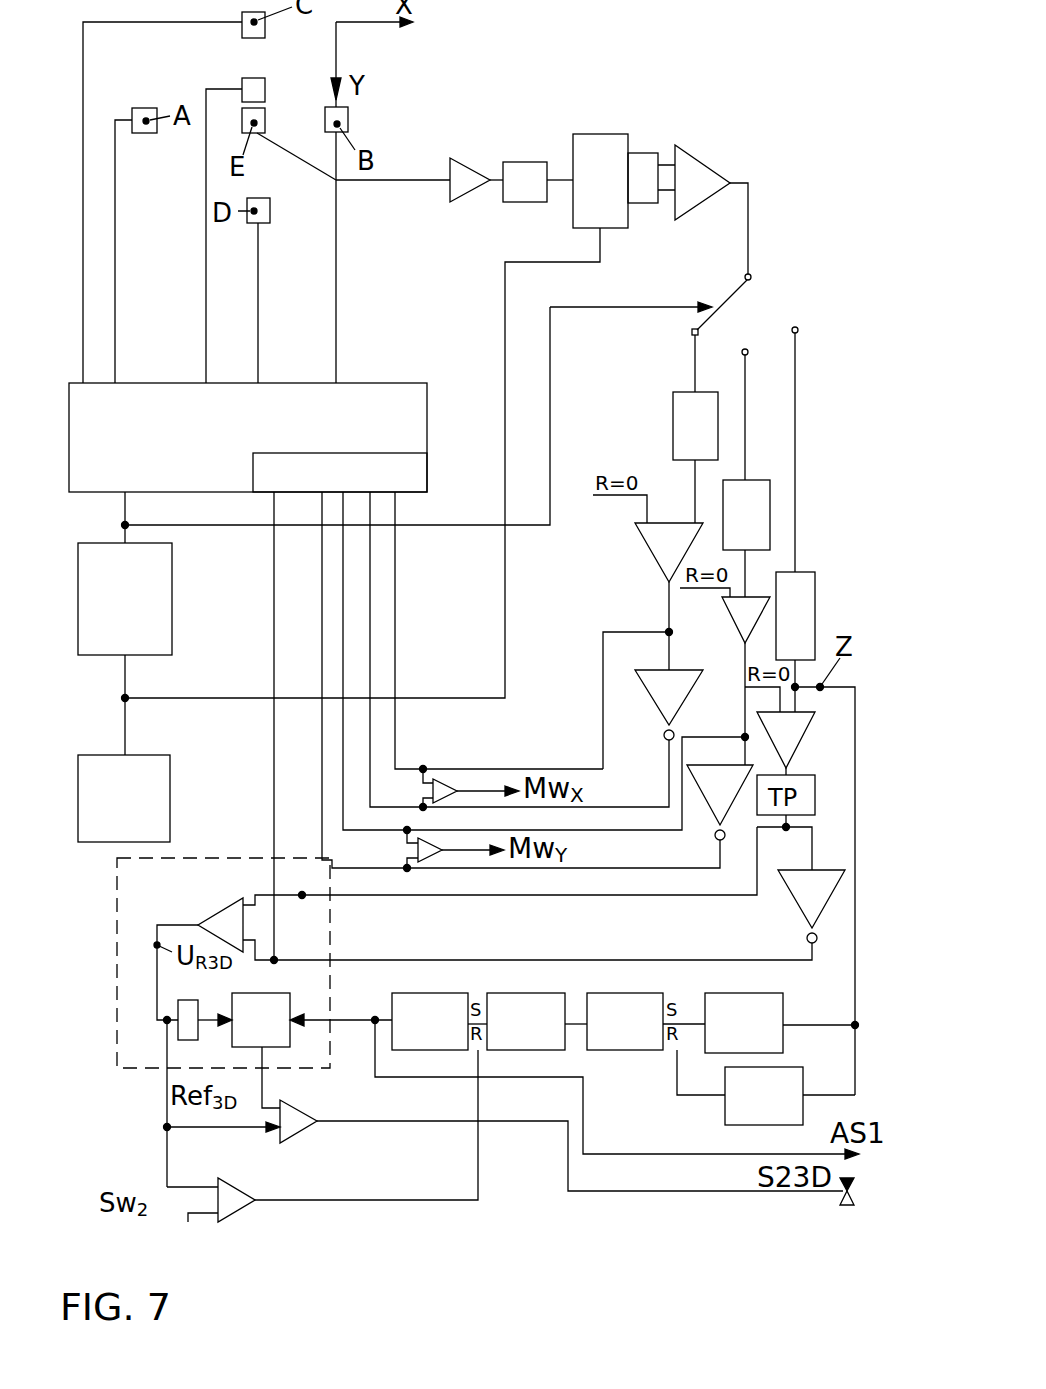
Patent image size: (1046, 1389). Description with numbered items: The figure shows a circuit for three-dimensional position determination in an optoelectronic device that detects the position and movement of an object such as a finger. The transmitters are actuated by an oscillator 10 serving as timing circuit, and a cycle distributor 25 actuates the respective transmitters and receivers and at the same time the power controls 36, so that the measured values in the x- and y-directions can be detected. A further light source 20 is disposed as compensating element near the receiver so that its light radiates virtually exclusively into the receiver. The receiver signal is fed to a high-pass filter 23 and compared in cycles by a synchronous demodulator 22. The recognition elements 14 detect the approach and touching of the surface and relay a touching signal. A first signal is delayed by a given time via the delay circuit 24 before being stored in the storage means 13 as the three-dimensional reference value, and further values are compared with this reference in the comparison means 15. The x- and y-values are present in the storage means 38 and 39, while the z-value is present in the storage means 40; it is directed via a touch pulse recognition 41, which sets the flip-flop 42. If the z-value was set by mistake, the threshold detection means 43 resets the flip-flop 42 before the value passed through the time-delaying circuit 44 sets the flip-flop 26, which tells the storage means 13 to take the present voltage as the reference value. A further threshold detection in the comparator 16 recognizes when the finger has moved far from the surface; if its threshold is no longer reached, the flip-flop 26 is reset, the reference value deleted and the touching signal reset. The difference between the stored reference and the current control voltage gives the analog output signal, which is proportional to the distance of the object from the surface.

The oscillator 10 is at (142, 778).
The storage means 13 is at (283, 1012).
The recognition elements 14 is at (158, 872).
The comparison means 15 is at (296, 1122).
The comparator 16 is at (237, 1197).
The further light source 20 is at (258, 88).
The synchronous demodulator 22 is at (585, 170).
The high-pass filter 23 is at (527, 170).
The delay circuit 24 is at (189, 1012).
The cycle distributor 25 is at (253, 419).
The flip-flop 26 is at (440, 1007).
The power controls 36 is at (371, 463).
The storage means 38 is at (687, 418).
The storage means 39 is at (765, 535).
The storage means 40 is at (815, 630).
The touch pulse recognition 41 is at (733, 1012).
The flip-flop 42 is at (637, 1008).
The threshold detection means 43 is at (795, 1085).
The time-delaying circuit 44 is at (528, 1007).